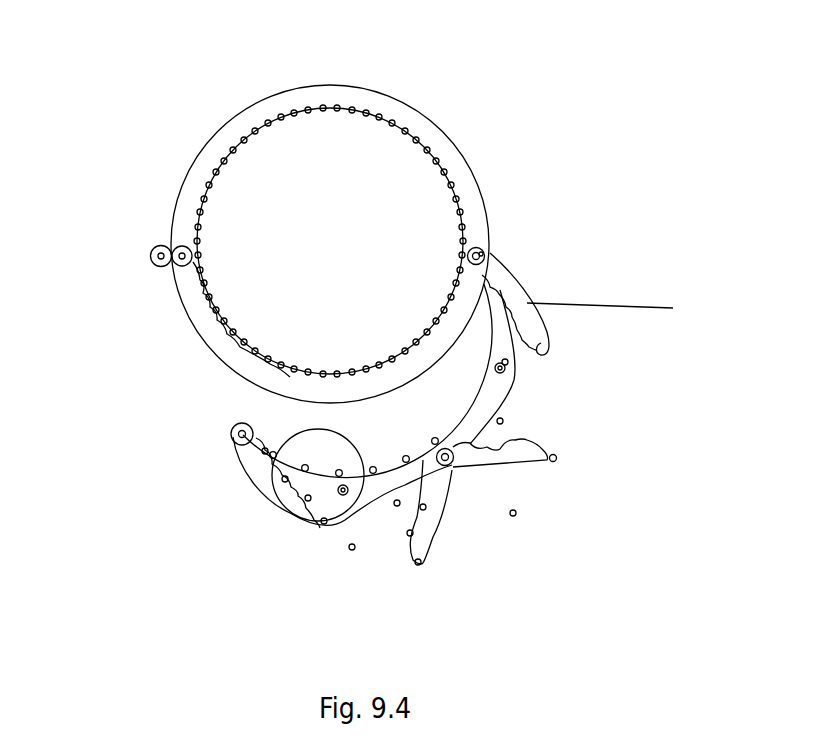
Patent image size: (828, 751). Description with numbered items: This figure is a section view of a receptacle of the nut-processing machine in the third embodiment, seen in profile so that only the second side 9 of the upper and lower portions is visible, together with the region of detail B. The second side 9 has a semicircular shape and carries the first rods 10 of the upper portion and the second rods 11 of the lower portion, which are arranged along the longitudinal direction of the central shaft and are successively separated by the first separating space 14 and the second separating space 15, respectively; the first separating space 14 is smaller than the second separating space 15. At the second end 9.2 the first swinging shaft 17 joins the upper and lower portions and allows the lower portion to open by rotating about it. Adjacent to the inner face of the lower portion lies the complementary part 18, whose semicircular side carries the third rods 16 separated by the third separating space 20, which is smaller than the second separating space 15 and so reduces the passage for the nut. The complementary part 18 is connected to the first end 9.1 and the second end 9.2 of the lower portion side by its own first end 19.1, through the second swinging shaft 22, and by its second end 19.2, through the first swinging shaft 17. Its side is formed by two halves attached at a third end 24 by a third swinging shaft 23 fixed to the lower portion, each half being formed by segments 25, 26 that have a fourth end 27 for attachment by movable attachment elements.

The second side 9 is at (309, 87).
The first end of the second side 9.1 is at (157, 245).
The second end of the second side 9.2 is at (473, 256).
The first rods 10 is at (460, 256).
The second rods 11 is at (474, 393).
The first separating space 14 is at (228, 150).
The second separating space 15 is at (420, 443).
The third rods 16 is at (545, 467).
The first swinging shaft 17 is at (490, 251).
The complementary part 18 is at (270, 612).
The first end of the sides of the complementary part 19.1 is at (257, 434).
The second end of the sides of the complementary part 19.2 is at (492, 263).
The third separating space 20 is at (525, 330).
The second swinging shaft 22 is at (231, 433).
The third swinging shaft 23 is at (452, 467).
The third end 24 is at (450, 473).
The segment 25 is at (257, 477).
The segment 26 is at (433, 537).
The fourth end 27 is at (508, 370).
The detail B is at (331, 513).